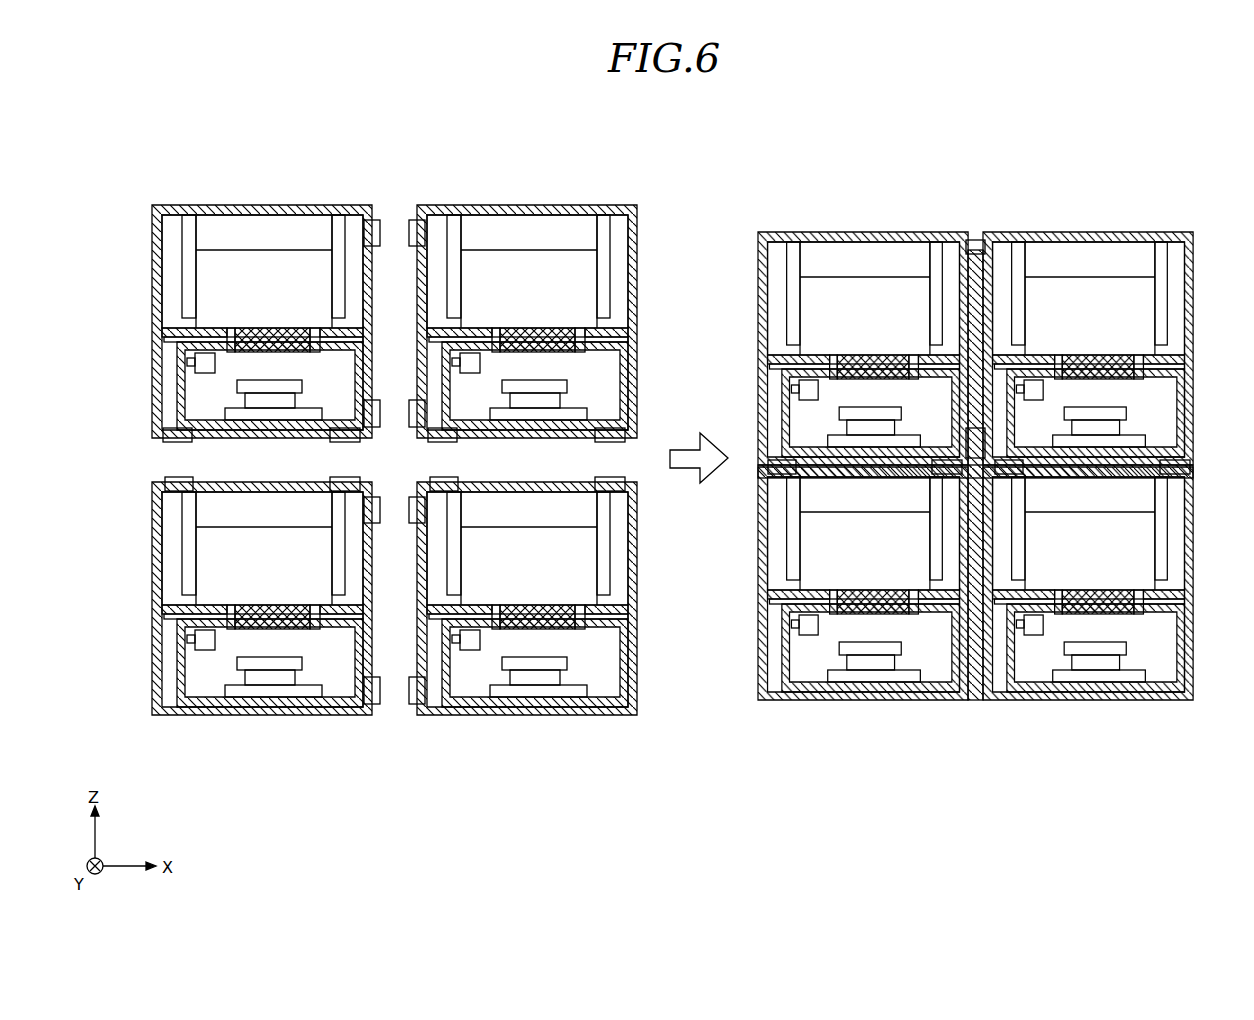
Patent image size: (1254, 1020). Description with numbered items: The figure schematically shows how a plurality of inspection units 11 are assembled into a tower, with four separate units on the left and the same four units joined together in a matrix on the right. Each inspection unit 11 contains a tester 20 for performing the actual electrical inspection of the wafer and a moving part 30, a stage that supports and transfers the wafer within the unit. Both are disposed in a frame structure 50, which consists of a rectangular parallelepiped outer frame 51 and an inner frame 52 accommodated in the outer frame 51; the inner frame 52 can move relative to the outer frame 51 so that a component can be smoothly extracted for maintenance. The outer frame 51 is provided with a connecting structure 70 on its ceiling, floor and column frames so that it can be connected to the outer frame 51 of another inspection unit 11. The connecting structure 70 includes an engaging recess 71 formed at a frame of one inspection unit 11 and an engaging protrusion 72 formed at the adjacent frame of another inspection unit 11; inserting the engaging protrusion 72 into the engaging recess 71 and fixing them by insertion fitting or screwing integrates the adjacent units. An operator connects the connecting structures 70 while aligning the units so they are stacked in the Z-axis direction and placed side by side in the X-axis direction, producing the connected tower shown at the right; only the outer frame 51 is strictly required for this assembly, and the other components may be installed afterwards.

The inspection unit 11 is at (663, 470).
The tester 20 is at (210, 262).
The moving part 30 is at (210, 405).
The frame structure 50 is at (632, 504).
The outer frame 51 is at (155, 328).
The inner frame 52 is at (158, 342).
The connecting structure 70 is at (663, 470).
The engaging recess 71 is at (378, 225).
The engaging protrusion 72 is at (410, 225).